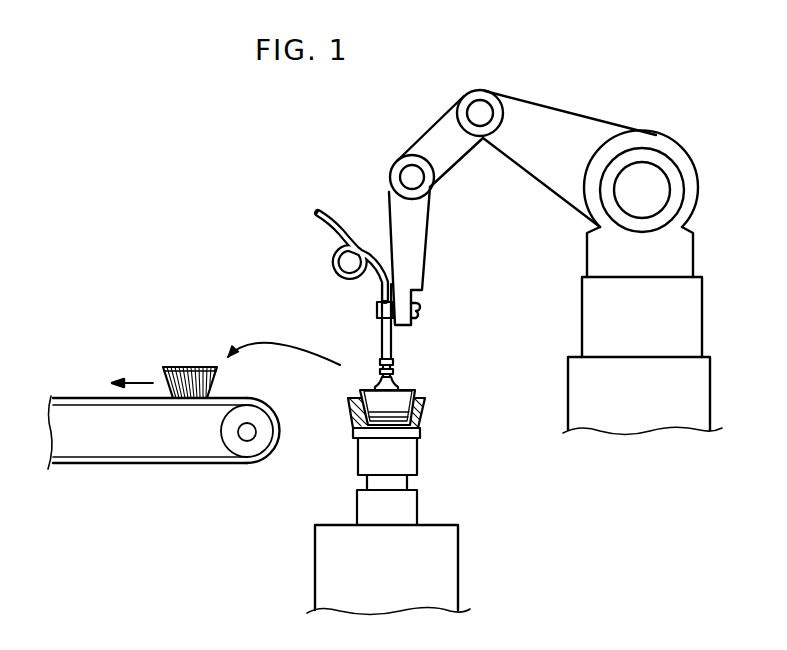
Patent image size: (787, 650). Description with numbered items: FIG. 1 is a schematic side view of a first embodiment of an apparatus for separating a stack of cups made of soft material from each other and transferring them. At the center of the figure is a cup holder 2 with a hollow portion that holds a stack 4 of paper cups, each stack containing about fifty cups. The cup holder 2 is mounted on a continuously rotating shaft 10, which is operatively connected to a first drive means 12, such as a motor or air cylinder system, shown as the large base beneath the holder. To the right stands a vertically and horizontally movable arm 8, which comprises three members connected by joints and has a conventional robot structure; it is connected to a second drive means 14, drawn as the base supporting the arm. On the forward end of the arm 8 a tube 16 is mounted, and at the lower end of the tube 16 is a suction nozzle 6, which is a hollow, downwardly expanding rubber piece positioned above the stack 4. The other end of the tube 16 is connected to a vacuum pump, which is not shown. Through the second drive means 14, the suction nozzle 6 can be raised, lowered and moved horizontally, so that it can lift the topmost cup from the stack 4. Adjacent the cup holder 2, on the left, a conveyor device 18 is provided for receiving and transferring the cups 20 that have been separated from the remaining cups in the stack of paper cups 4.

The cup holder 2 is at (422, 434).
The stack of paper cups 4 is at (418, 396).
The suction nozzle 6 is at (397, 385).
The vertically and horizontally movable arm 8 is at (517, 172).
The continuously rotating shaft 10 is at (408, 483).
The first drive means 12 is at (458, 575).
The second drive means 14 is at (710, 392).
The tube 16 is at (346, 217).
The conveyor device 18 is at (76, 392).
The cup 20 is at (188, 366).